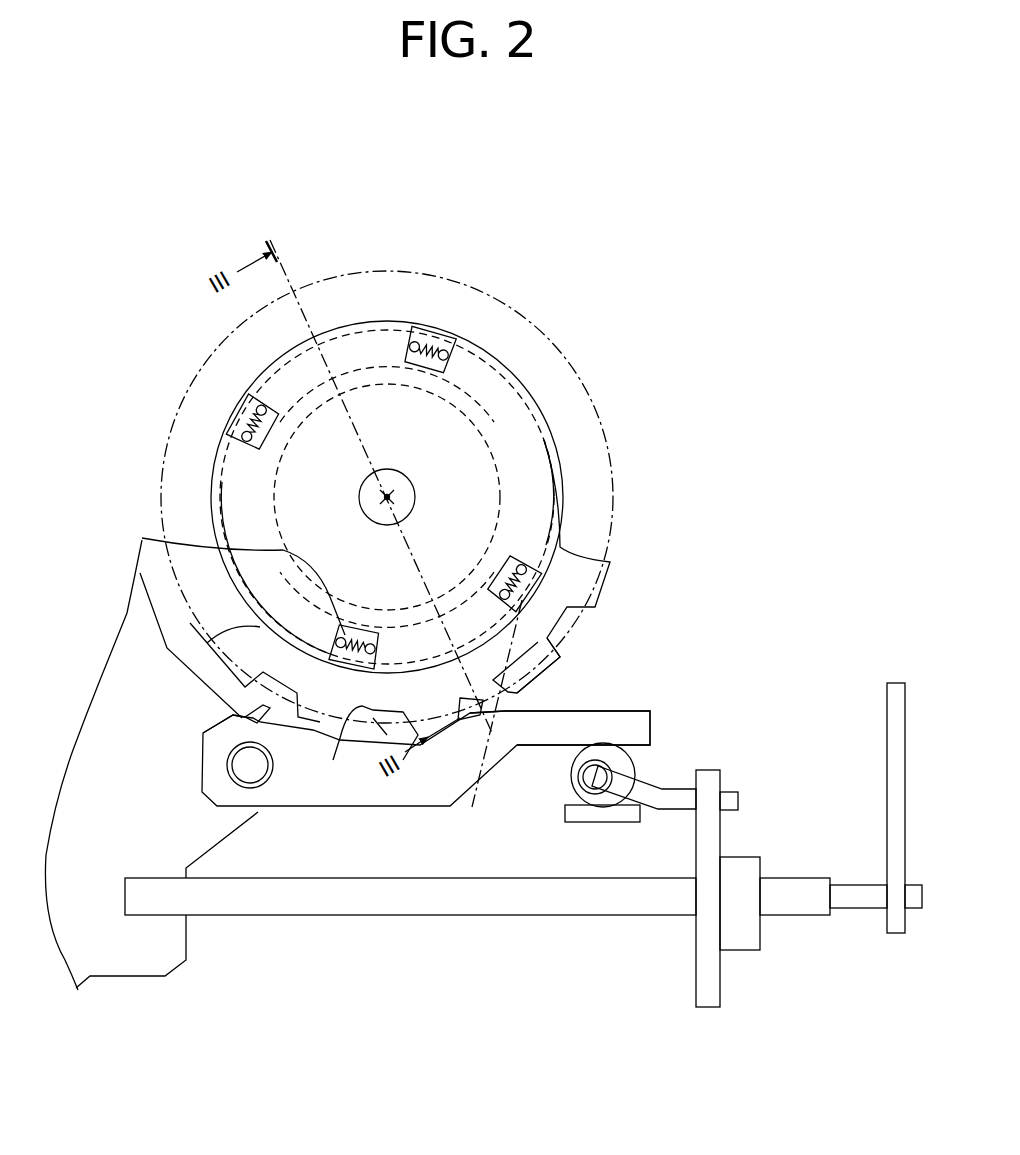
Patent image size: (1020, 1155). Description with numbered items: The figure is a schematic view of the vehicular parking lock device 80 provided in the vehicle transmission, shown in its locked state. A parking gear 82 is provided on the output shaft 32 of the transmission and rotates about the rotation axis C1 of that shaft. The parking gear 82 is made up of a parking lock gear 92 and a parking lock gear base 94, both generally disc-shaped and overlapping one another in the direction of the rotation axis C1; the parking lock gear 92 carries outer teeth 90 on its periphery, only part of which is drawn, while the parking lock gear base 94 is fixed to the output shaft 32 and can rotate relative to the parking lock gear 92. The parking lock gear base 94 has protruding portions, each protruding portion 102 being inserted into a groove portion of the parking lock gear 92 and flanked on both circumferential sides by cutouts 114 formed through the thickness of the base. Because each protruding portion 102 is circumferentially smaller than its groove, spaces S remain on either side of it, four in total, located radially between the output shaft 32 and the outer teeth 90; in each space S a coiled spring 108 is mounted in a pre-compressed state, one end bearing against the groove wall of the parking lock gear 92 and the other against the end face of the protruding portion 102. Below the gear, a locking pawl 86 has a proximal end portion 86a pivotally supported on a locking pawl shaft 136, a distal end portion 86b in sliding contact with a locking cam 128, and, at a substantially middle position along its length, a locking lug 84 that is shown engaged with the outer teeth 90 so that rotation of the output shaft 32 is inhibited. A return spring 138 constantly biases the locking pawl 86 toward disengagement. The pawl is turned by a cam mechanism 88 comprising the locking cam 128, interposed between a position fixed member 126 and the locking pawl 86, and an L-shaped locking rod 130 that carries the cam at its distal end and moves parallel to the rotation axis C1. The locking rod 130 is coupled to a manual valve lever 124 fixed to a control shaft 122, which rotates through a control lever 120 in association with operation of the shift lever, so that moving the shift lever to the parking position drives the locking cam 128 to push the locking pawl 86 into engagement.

The output shaft 32 is at (393, 483).
The rotation axis C1 is at (413, 512).
The vehicular parking lock device 80 is at (615, 315).
The parking lock gear base 94 is at (195, 458).
The parking gear 82 is at (645, 487).
The cutouts 114 is at (520, 556).
The spaces S is at (142, 538).
The parking lock gear 92 is at (617, 580).
The outer teeth 90 is at (535, 677).
The coiled spring 108 is at (140, 573).
The locking pawl 86 is at (392, 832).
The proximal end portion 86a is at (205, 718).
The distal end portion 86b is at (653, 703).
The return spring 138 is at (203, 733).
The locking pawl shaft 136 is at (228, 760).
The protruding portion 102 is at (479, 769).
The cam mechanism 88 is at (673, 757).
The locking cam 128 is at (565, 788).
The position fixed member 126 is at (623, 813).
The locking rod 130 is at (732, 802).
The manual valve lever 124 is at (712, 997).
The control shaft 122 is at (808, 903).
The control lever 120 is at (893, 927).
The locking lug 84 is at (262, 814).